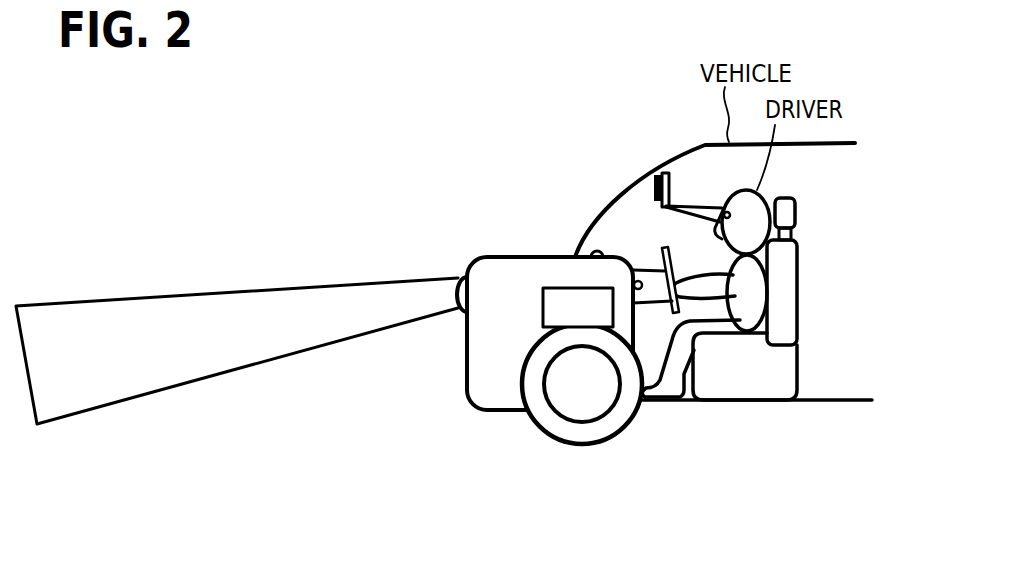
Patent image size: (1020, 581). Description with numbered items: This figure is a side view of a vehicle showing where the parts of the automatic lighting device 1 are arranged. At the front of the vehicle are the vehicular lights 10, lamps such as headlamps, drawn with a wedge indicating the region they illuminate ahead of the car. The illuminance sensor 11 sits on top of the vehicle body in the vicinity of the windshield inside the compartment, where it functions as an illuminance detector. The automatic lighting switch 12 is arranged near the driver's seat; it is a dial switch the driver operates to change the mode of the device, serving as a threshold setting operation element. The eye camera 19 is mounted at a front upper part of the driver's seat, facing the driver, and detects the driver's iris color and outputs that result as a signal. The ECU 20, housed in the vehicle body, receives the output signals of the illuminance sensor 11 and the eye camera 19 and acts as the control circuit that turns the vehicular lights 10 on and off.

The automatic lighting device 1 is at (476, 156).
The vehicular lights 10 is at (463, 274).
The illuminance sensor 11 is at (593, 250).
The automatic lighting switch 12 is at (641, 290).
The eye camera 19 is at (657, 200).
The ECU 20 is at (553, 287).